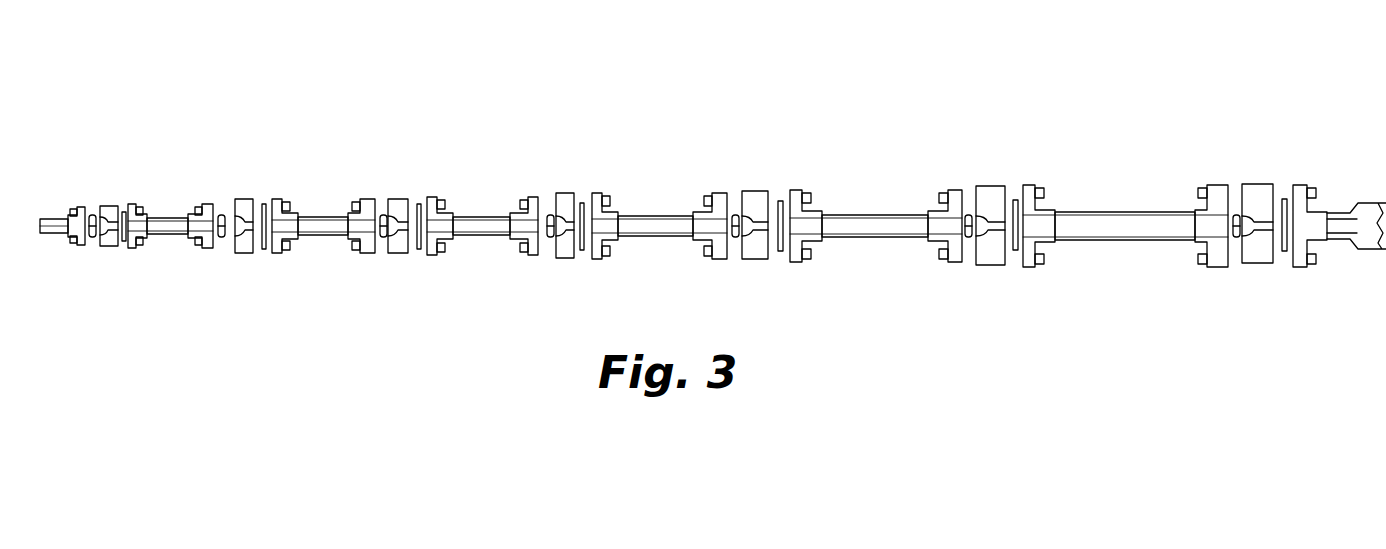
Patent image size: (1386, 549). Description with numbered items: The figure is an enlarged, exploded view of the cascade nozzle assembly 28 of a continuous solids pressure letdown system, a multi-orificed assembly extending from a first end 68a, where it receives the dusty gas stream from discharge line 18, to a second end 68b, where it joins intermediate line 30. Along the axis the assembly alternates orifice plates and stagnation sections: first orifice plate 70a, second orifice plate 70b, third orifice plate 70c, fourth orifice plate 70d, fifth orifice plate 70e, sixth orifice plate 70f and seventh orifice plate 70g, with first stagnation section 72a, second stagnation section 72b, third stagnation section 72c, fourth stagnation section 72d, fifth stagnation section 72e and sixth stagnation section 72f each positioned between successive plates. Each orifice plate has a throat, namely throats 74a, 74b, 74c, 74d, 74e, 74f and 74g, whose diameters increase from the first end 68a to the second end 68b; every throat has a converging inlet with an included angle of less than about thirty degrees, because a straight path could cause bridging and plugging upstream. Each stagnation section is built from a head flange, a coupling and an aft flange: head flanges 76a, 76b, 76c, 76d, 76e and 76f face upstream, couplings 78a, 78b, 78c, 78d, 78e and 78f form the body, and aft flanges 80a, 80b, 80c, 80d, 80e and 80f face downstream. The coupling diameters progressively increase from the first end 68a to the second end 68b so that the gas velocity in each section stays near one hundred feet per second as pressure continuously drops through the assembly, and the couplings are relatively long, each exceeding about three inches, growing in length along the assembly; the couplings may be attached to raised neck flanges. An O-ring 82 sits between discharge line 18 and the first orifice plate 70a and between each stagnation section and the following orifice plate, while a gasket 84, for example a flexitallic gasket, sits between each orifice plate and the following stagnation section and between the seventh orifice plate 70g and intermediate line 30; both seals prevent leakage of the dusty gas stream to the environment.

The discharge line 18 is at (56, 234).
The cascade nozzle assembly 28 is at (741, 80).
The intermediate line 30 is at (1358, 249).
The first end 68a is at (186, 308).
The second end 68b is at (1165, 326).
The first orifice plate 70a is at (110, 248).
The second orifice plate 70b is at (243, 253).
The third orifice plate 70c is at (401, 253).
The fourth orifice plate 70d is at (562, 258).
The fifth orifice plate 70e is at (759, 259).
The sixth orifice plate 70f is at (996, 265).
The seventh orifice plate 70g is at (1265, 263).
The first stagnation section 72a is at (213, 174).
The second stagnation section 72b is at (380, 176).
The third stagnation section 72c is at (538, 148).
The fourth stagnation section 72d is at (726, 162).
The fifth stagnation section 72e is at (962, 152).
The sixth stagnation section 72f is at (1230, 157).
The throat 74a is at (107, 228).
The throat 74b is at (230, 228).
The throat 74c is at (397, 231).
The throat 74d is at (562, 230).
The throat 74e is at (753, 232).
The throat 74f is at (985, 230).
The throat 74g is at (1260, 232).
The head flange 76a is at (132, 204).
The head flange 76b is at (276, 198).
The head flange 76c is at (430, 197).
The head flange 76d is at (597, 192).
The head flange 76e is at (796, 190).
The head flange 76f is at (1028, 185).
The coupling 78a is at (168, 236).
The coupling 78b is at (325, 236).
The coupling 78c is at (487, 236).
The coupling 78d is at (665, 237).
The coupling 78e is at (850, 237).
The coupling 78f is at (1113, 240).
The aft flange 80a is at (204, 203).
The aft flange 80b is at (362, 199).
The aft flange 80c is at (533, 197).
The aft flange 80d is at (717, 193).
The aft flange 80e is at (950, 190).
The aft flange 80f is at (1214, 185).
The O-ring 82 is at (92, 214).
The gasket 84 is at (124, 212).